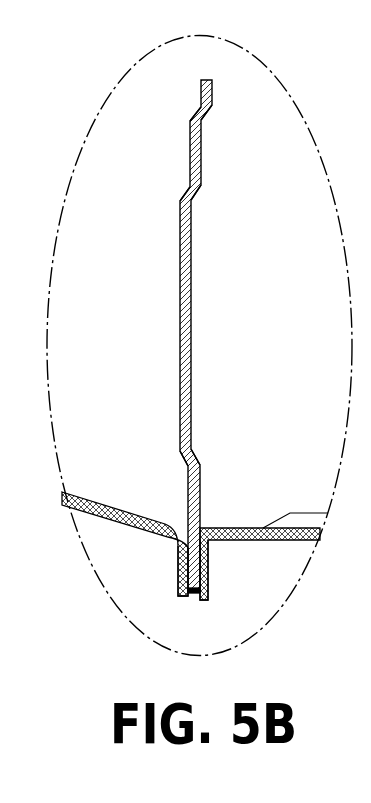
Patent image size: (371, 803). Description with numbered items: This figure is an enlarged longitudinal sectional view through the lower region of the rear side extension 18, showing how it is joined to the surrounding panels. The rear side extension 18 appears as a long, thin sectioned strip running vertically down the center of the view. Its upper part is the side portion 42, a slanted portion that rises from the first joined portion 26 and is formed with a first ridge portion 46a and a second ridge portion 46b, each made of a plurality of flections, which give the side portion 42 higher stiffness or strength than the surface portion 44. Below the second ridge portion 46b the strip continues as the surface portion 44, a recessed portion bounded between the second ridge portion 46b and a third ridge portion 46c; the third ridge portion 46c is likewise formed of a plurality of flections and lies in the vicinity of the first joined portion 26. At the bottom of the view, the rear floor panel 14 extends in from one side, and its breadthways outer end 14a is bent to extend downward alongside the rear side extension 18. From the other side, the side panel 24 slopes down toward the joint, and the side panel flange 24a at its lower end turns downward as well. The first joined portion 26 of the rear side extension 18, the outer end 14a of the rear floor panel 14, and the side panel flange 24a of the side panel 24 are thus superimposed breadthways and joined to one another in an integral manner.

The rear floor panel 14 is at (241, 525).
The outer end of the rear floor panel 14a is at (209, 576).
The rear side extension 18 is at (195, 361).
The side panel 24 is at (137, 507).
The side panel flange 24a is at (180, 576).
The first joined portion 26 is at (192, 598).
The side portion 42 is at (236, 157).
The surface portion 44 is at (236, 336).
The first ridge portion 46a is at (206, 123).
The second ridge portion 46b is at (219, 197).
The third ridge portion 46c is at (199, 457).